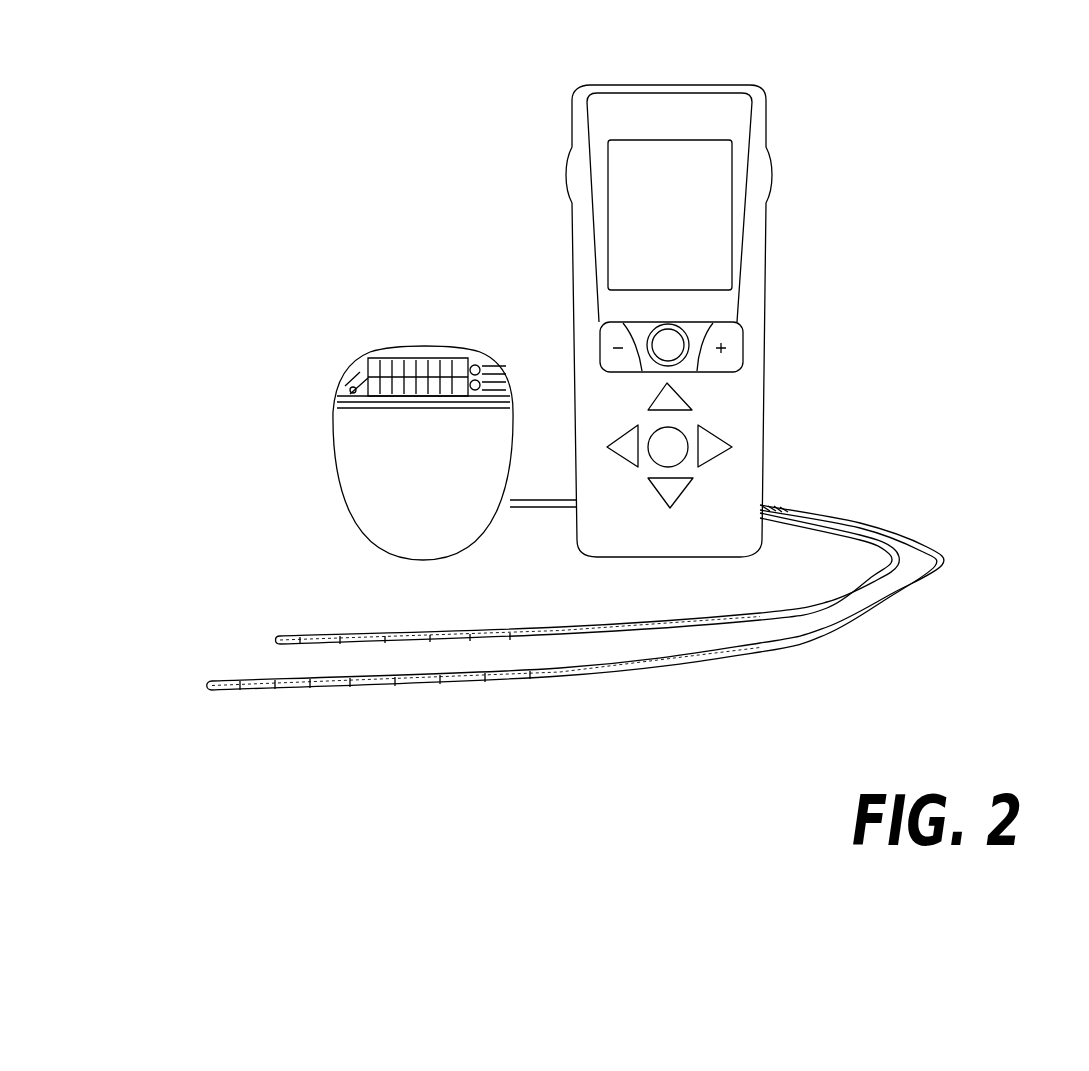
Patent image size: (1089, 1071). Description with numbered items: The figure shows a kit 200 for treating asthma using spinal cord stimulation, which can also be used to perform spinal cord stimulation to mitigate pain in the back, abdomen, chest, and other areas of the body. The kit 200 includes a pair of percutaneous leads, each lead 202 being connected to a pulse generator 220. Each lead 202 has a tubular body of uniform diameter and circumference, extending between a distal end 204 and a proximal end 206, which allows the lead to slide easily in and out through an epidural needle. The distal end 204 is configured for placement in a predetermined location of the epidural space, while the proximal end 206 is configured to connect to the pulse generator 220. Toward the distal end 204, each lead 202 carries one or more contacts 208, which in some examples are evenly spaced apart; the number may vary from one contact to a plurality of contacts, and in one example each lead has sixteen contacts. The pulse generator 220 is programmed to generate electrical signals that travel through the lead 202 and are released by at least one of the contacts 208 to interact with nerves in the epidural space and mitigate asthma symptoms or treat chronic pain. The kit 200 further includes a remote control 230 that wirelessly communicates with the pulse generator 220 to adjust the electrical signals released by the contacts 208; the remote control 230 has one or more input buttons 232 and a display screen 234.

The kit 200 is at (268, 130).
The lead 202 is at (898, 570).
The distal end 204 is at (289, 611).
The proximal end 206 is at (558, 488).
The contact 208 is at (322, 636).
The pulse generator 220 is at (326, 401).
The remote control 230 is at (786, 131).
The input button 232 is at (674, 396).
The display screen 234 is at (697, 240).